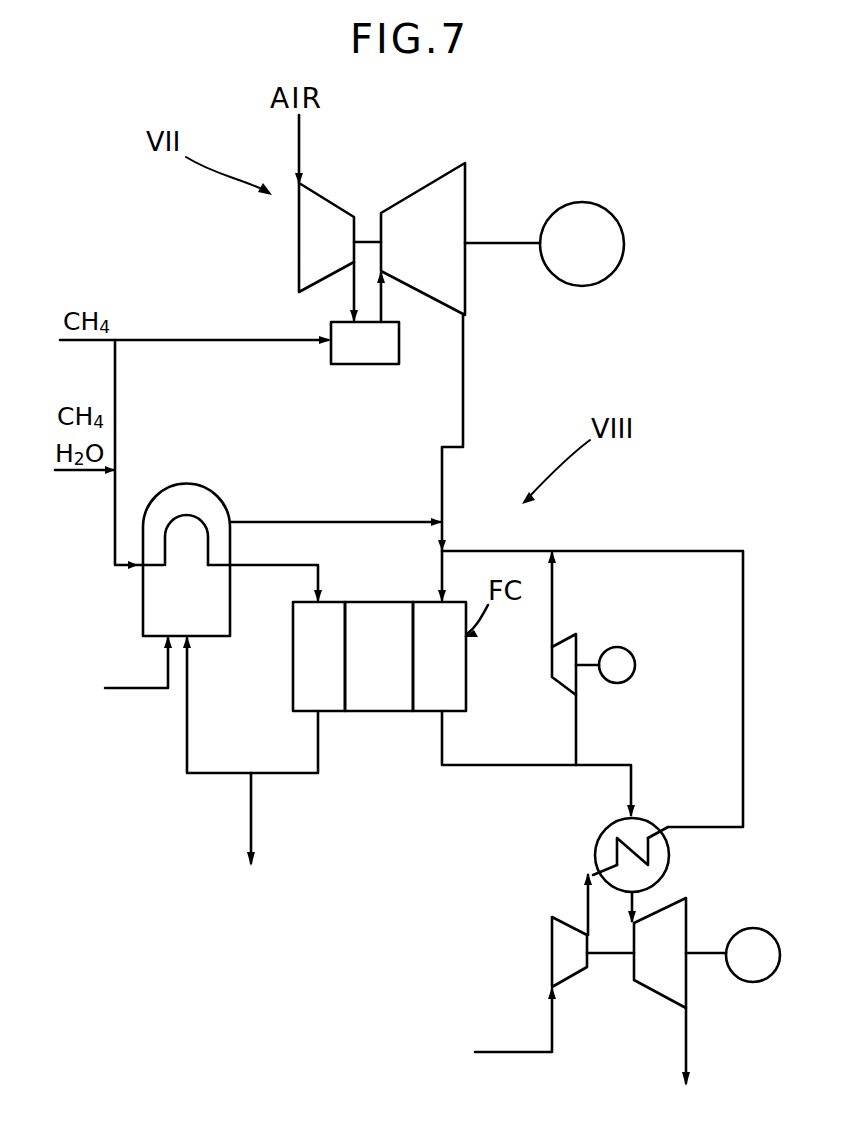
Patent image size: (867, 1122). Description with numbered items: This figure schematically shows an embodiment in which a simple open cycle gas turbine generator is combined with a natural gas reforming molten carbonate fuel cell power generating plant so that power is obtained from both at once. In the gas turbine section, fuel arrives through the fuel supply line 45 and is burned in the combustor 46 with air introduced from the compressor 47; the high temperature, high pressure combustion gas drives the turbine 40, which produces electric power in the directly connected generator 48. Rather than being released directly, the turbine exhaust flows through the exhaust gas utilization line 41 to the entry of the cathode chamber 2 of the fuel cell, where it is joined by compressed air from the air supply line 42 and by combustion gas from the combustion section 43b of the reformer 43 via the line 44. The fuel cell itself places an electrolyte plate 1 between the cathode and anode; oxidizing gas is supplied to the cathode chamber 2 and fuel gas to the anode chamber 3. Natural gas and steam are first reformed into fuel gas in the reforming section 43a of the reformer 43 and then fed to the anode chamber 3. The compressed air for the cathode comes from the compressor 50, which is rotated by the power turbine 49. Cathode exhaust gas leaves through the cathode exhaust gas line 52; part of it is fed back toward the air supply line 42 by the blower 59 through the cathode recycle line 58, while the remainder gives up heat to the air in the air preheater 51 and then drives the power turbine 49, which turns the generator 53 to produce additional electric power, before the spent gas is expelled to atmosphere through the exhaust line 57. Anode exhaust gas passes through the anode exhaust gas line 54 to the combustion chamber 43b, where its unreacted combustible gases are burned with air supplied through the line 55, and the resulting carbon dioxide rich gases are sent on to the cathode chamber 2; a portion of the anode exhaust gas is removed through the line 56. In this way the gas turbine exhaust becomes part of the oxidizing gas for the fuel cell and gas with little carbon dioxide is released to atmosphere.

The electrolyte plate 1 is at (372, 612).
The cathode chamber 2 is at (466, 676).
The anode chamber 3 is at (293, 660).
The turbine 40 is at (456, 185).
The exhaust gas utilization line 41 is at (463, 400).
The air supply line 42 is at (672, 551).
The reformer 43 is at (156, 535).
The reforming section 43a is at (165, 533).
The combustion section 43b is at (155, 593).
The line 44 is at (303, 521).
The fuel supply line 45 is at (170, 338).
The combustor 46 is at (357, 366).
The compressor 47 is at (302, 256).
The generator 48 is at (602, 221).
The power turbine 49 is at (648, 982).
The compressor 50 is at (556, 932).
The air preheater 51 is at (610, 840).
The cathode exhaust gas line 52 is at (453, 768).
The generator 53 is at (748, 935).
The anode exhaust gas line 54 is at (187, 728).
The line 55 is at (118, 685).
The line 56 is at (249, 820).
The exhaust line 57 is at (688, 1050).
The cathode recycle line 58 is at (578, 725).
The blower 59 is at (568, 648).